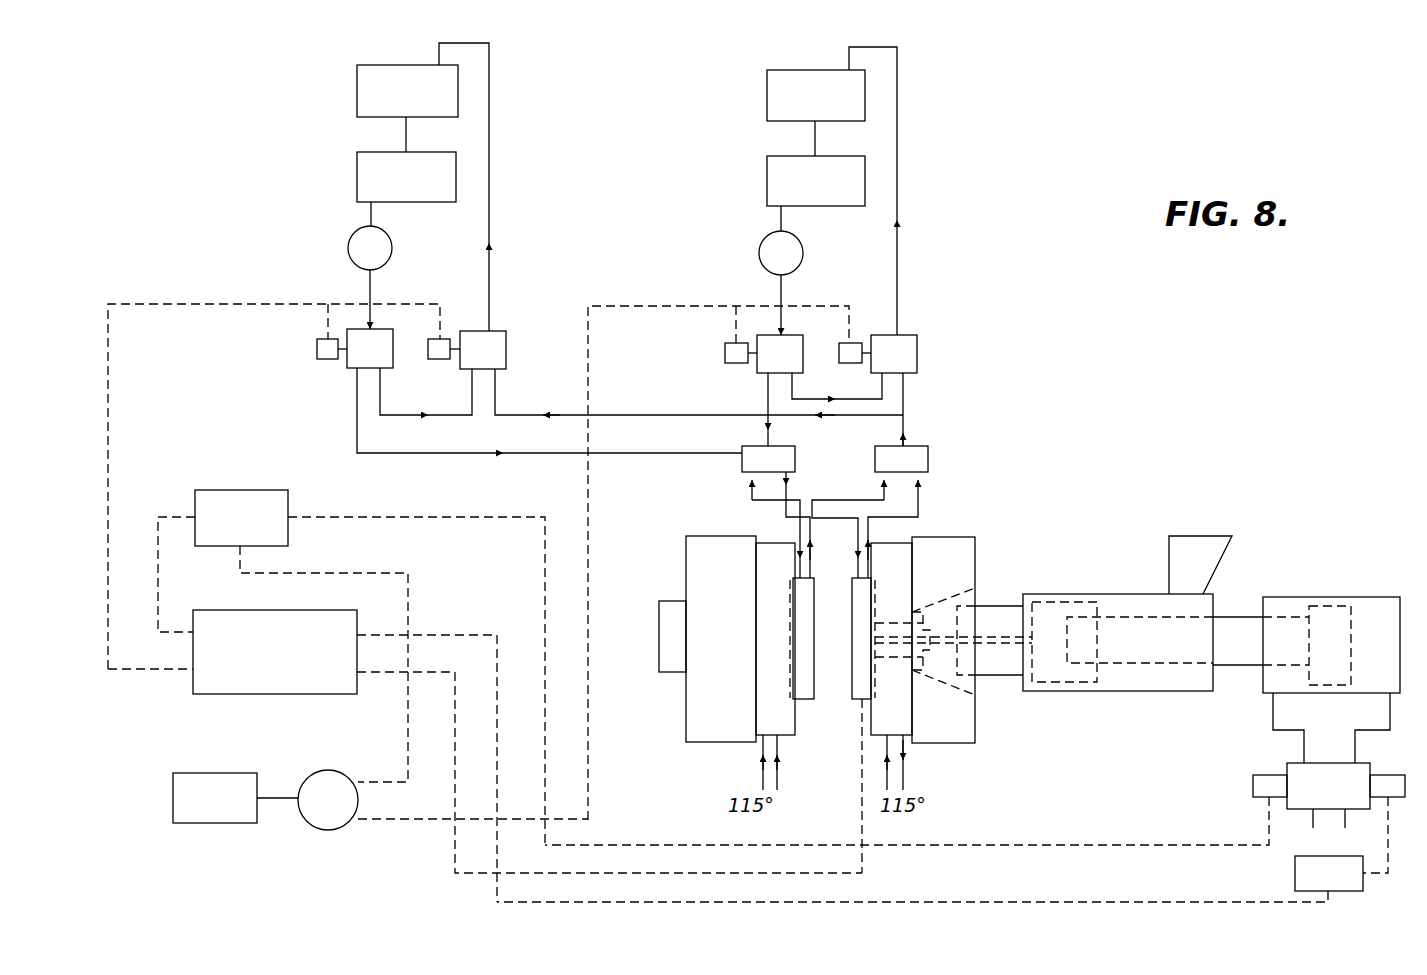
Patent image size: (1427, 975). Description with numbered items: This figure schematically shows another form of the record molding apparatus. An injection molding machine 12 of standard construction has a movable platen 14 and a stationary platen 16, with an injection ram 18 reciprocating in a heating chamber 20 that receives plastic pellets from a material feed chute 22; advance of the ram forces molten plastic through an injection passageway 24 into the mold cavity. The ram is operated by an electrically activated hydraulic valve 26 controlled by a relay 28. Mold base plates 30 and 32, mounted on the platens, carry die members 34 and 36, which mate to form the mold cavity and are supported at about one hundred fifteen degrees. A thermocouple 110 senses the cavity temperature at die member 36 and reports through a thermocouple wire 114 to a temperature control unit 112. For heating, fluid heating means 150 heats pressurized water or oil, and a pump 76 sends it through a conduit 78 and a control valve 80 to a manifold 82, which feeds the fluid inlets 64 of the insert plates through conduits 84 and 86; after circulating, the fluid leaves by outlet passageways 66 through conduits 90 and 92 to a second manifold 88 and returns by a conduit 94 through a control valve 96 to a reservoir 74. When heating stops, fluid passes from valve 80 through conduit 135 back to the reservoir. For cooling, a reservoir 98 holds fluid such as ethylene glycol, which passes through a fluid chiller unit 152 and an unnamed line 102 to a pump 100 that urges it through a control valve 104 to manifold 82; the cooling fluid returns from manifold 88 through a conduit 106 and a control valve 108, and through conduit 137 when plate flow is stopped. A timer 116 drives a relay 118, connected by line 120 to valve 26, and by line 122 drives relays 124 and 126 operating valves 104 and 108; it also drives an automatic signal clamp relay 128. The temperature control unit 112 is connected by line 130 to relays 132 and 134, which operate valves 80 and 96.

The injection molding machine 12 is at (1121, 565).
The movable platen 14 is at (702, 748).
The stationary platen 16 is at (963, 553).
The injection ram 18 is at (1231, 627).
The heating chamber 20 is at (1163, 691).
The material feed chute 22 is at (1212, 541).
The injection passageway 24 is at (988, 645).
The hydraulic valve 26 is at (1287, 763).
The relay 28 is at (1353, 893).
The mold base plate 30 is at (772, 556).
The mold base plate 32 is at (918, 549).
The die member 34 is at (808, 699).
The die member 36 is at (856, 684).
The fluid inlets 64 is at (800, 533).
The outlet passageways 66 is at (813, 553).
The reservoir 74 is at (357, 95).
The pump 76 is at (348, 258).
The conduit 78 is at (373, 293).
The control valve 80 is at (347, 368).
The manifold 82 is at (742, 449).
The conduit 84 is at (752, 486).
The conduit 86 is at (791, 498).
The second manifold 88 is at (928, 446).
The conduit 90 is at (884, 486).
The conduit 92 is at (921, 502).
The conduit 94 is at (612, 418).
The control valve 96 is at (508, 341).
The reservoir 98 is at (767, 100).
The pump 100 is at (763, 266).
The line 102 is at (781, 215).
The control valve 104 is at (757, 373).
The conduit 106 is at (898, 292).
The control valve 108 is at (918, 353).
The thermocouple 110 is at (868, 688).
The temperature control unit 112 is at (252, 697).
The thermocouple wire 114 is at (826, 873).
The timer 116 is at (330, 832).
The relay 118 is at (242, 491).
The line 120 is at (403, 516).
The line 122 is at (590, 714).
The relay 124 is at (725, 351).
The relay 126 is at (840, 343).
The automatic signal clamp relay 128 is at (220, 825).
The line 130 is at (110, 476).
The relay 132 is at (317, 350).
The relay 134 is at (437, 359).
The conduit 135 is at (462, 415).
The conduit 137 is at (855, 399).
The fluid heating means 150 is at (357, 177).
The fluid chiller unit 152 is at (767, 178).